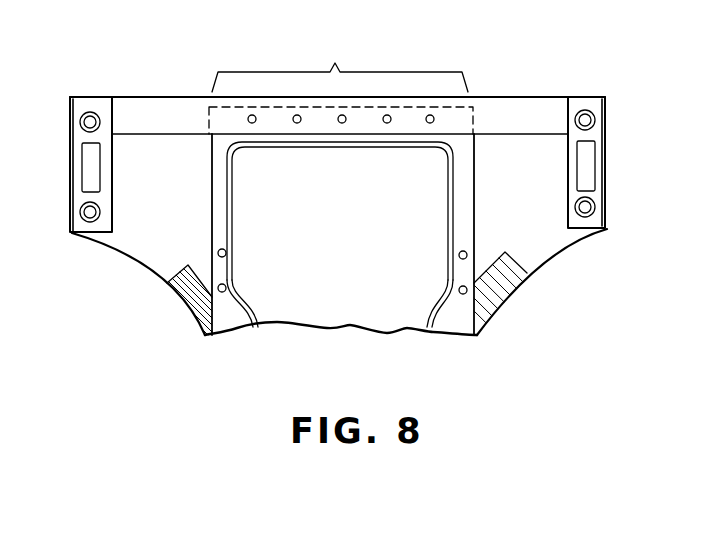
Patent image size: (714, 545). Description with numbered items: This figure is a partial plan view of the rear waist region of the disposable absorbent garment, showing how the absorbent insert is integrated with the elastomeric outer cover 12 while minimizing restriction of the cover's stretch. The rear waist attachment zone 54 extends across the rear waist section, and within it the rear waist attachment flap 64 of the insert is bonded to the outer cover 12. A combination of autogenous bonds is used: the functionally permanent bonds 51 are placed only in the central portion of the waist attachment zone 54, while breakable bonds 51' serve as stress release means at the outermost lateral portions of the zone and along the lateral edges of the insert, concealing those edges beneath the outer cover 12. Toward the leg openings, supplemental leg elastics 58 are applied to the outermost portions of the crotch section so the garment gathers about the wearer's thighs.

The elastomeric outer cover 12 is at (522, 153).
The rear waist attachment zone 54 is at (335, 63).
The functionally permanent autogenous bonds 51 is at (342, 161).
The breakable autogenous bonds 51' is at (368, 205).
The rear waist attachment flap 64 is at (413, 138).
The supplemental leg elastics 58 is at (197, 305).